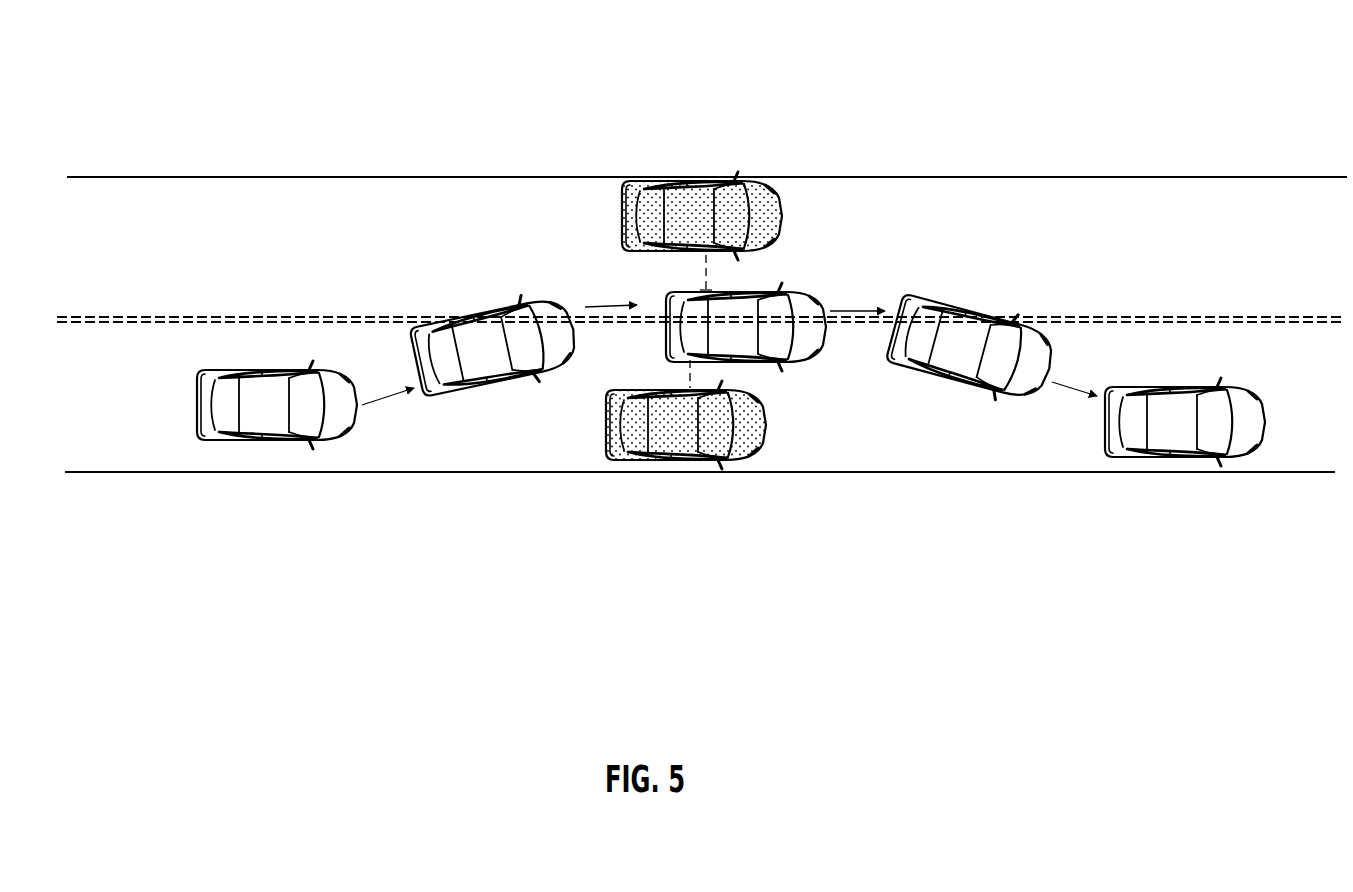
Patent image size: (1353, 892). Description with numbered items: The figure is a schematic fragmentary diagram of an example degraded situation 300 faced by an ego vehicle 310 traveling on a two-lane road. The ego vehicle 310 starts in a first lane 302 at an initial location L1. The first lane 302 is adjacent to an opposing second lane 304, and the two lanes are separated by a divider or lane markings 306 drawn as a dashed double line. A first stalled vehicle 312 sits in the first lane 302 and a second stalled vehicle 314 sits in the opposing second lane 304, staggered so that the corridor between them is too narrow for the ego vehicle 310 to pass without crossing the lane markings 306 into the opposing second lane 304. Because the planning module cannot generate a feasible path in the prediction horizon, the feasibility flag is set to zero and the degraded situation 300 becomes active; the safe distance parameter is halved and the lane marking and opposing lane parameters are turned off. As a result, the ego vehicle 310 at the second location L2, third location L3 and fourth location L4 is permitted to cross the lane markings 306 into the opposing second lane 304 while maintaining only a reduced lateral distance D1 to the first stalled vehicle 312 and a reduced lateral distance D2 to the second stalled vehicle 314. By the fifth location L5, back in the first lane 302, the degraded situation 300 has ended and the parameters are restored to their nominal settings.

The degraded situation 300 is at (490, 106).
The first lane 302 is at (167, 474).
The opposing second lane 304 is at (113, 175).
The lane markings 306 is at (175, 305).
The ego vehicle 310 is at (189, 377).
The first stalled vehicle 312 is at (684, 463).
The second stalled vehicle 314 is at (728, 177).
The initial location L1 is at (333, 372).
The second location L2 is at (500, 308).
The third location L3 is at (772, 357).
The fourth location L4 is at (940, 300).
The fifth location L5 is at (1222, 388).
The reduced lateral distance to first stalled vehicle D1 is at (690, 373).
The reduced lateral distance to second stalled vehicle D2 is at (711, 285).